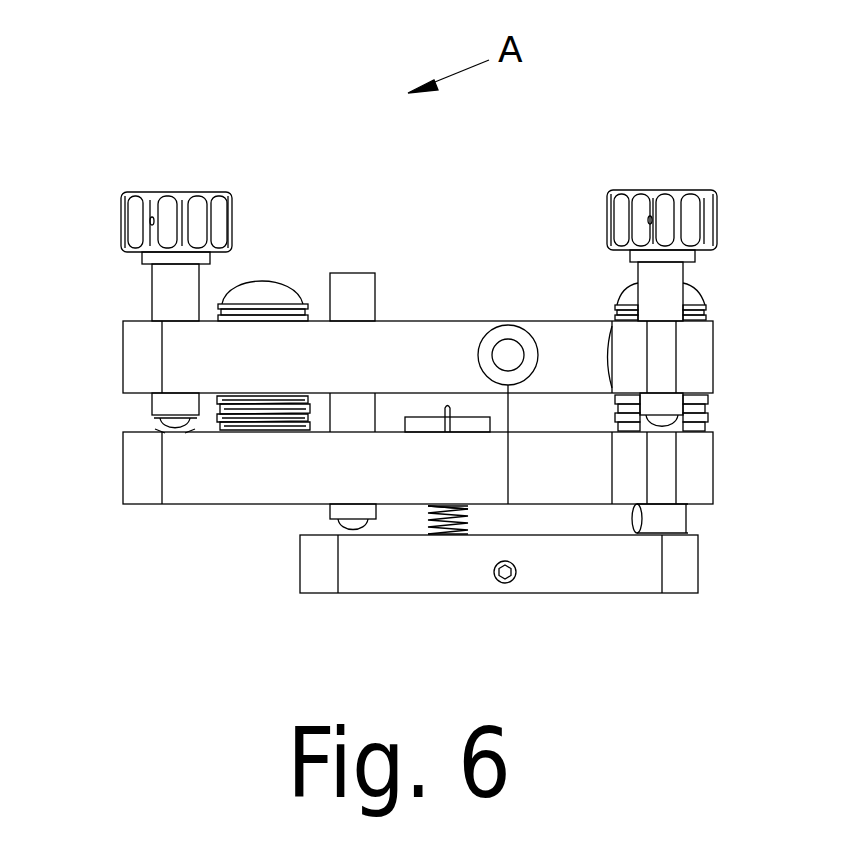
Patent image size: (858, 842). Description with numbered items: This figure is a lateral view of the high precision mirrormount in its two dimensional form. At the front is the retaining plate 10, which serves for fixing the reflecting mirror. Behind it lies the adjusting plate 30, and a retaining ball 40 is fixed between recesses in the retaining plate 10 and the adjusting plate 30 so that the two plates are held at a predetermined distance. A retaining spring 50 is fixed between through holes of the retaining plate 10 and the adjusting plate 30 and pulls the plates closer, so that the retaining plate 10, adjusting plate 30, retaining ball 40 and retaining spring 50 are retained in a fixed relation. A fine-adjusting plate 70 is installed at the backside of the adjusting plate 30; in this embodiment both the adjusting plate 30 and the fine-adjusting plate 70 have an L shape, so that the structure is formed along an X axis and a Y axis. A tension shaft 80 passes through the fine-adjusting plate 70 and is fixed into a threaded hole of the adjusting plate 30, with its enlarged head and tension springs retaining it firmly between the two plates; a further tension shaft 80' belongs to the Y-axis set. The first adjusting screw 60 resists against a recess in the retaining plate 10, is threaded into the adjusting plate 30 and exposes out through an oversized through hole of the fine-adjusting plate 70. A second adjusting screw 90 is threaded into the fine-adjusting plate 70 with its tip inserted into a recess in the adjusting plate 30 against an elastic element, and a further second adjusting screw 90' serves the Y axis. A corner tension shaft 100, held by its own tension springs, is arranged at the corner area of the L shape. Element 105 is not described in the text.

The retaining plate 10 is at (396, 568).
The adjusting plate 30 is at (137, 470).
The retaining ball 40 is at (662, 513).
The retaining spring 50 is at (440, 535).
The first adjusting screw 60 is at (342, 285).
The fine-adjusting plate 70 is at (135, 348).
The tension shaft 80 is at (264, 261).
The tension shaft 80' is at (717, 287).
The second adjusting screw 90 is at (158, 221).
The second adjusting screw 90' is at (716, 252).
The corner tension shaft 100 is at (672, 408).
The ring aperture 105 is at (505, 345).